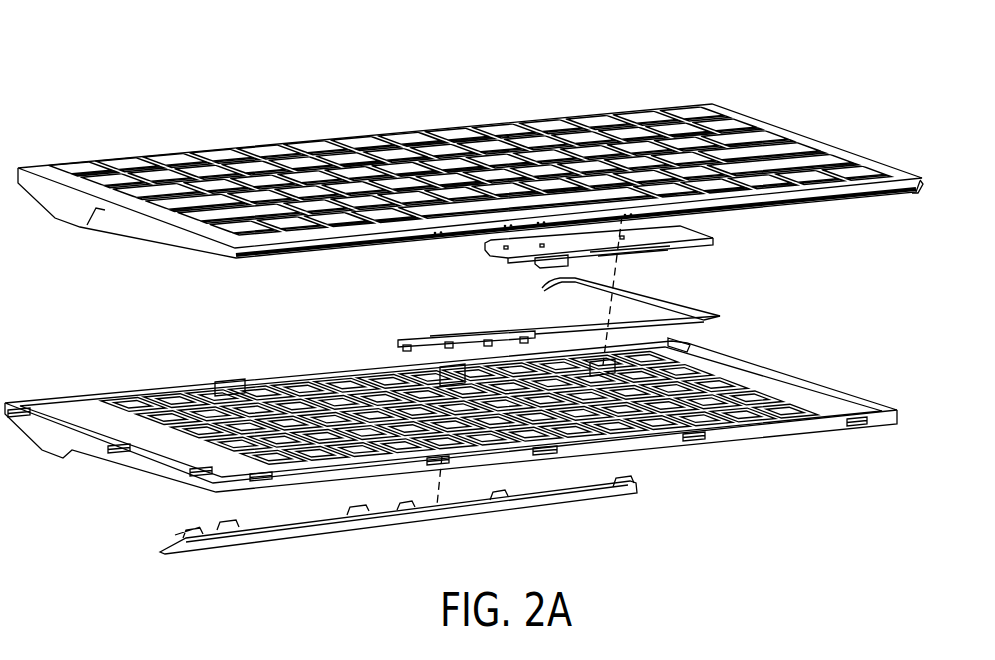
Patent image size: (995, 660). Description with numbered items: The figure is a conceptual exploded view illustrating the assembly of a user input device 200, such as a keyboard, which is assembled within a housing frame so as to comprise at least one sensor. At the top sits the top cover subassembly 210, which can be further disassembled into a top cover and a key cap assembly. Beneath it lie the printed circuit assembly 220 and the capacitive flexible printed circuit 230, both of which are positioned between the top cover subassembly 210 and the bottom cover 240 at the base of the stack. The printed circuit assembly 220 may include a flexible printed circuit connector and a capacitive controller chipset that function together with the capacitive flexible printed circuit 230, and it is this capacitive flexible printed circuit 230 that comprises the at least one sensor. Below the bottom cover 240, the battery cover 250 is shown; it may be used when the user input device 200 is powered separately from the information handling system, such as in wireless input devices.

The user input device 200 is at (226, 87).
The top cover subassembly 210 is at (785, 139).
The printed circuit assembly 220 is at (670, 237).
The capacitive flexible printed circuit 230 is at (702, 318).
The bottom cover 240 is at (787, 380).
The battery cover 250 is at (578, 502).